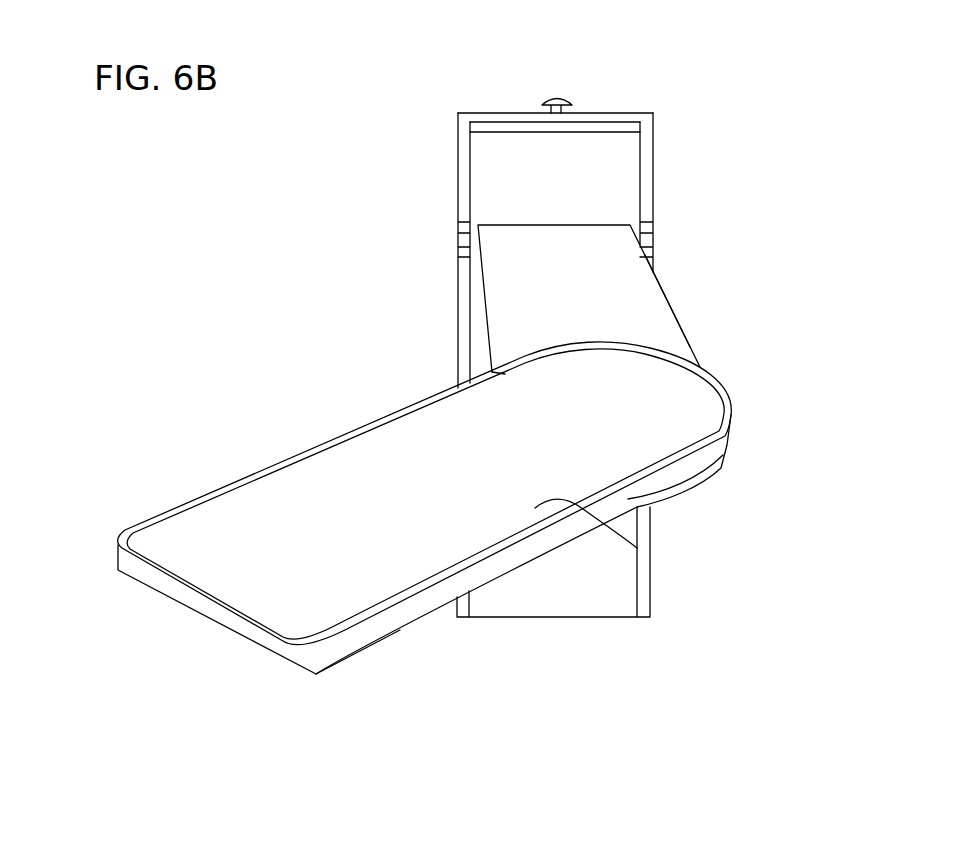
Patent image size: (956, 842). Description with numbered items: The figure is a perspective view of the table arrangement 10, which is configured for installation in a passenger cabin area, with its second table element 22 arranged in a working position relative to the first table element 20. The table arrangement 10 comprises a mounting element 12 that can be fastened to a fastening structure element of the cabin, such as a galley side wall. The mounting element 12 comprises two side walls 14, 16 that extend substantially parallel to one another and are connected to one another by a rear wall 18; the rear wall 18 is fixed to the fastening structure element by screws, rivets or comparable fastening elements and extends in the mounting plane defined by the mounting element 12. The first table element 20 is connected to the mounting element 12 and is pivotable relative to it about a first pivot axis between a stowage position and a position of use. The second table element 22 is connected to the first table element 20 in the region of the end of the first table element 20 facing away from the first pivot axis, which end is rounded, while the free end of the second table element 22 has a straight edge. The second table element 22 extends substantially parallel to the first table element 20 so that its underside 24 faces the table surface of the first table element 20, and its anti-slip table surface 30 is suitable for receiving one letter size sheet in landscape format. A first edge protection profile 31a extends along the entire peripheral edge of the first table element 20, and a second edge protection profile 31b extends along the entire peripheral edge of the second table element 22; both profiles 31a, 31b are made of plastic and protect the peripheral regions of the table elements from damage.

The table arrangement 10 is at (432, 378).
The mounting element 12 is at (654, 121).
The side wall 14 is at (654, 166).
The side wall 16 is at (458, 141).
The rear wall 18 is at (613, 138).
The first table element 20 is at (653, 268).
The second table element 22 is at (651, 547).
The underside 24 is at (674, 329).
The table surface 30 is at (395, 598).
The first edge protection profile 31a is at (481, 320).
The second edge protection profile 31b is at (340, 652).